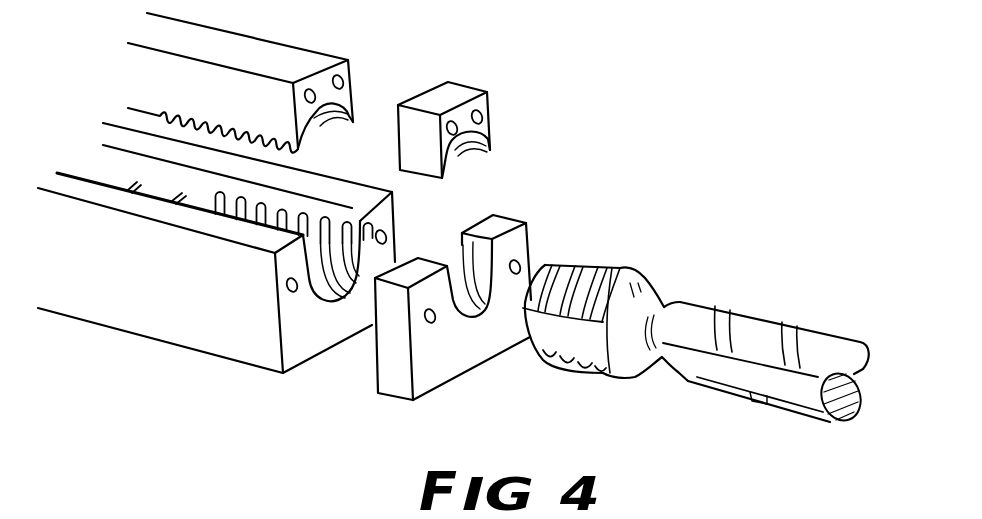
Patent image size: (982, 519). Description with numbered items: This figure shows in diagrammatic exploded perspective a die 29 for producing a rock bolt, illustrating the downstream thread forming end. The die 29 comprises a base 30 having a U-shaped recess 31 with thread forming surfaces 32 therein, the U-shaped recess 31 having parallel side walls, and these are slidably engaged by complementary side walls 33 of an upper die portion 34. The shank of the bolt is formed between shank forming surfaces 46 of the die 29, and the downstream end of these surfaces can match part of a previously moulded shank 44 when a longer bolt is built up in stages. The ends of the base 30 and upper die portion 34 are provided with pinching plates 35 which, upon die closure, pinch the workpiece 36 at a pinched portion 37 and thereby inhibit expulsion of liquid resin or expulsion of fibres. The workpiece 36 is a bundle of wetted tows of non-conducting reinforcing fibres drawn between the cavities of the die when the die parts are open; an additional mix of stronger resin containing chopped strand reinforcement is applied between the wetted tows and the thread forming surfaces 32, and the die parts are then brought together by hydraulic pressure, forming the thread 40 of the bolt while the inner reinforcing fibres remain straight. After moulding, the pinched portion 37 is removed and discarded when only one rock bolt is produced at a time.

The die 29 is at (371, 85).
The base 30 is at (245, 269).
The U-shaped recess 31 is at (318, 207).
The thread forming surfaces 32 is at (330, 276).
The side walls 33 is at (346, 218).
The upper die portion 34 is at (267, 58).
The pinching plates 35 is at (497, 227).
The workpiece 36 is at (696, 325).
The pinched portion 37 is at (669, 288).
The thread 40 is at (582, 377).
The shank 44 is at (730, 388).
The shank forming surfaces 46 is at (165, 166).